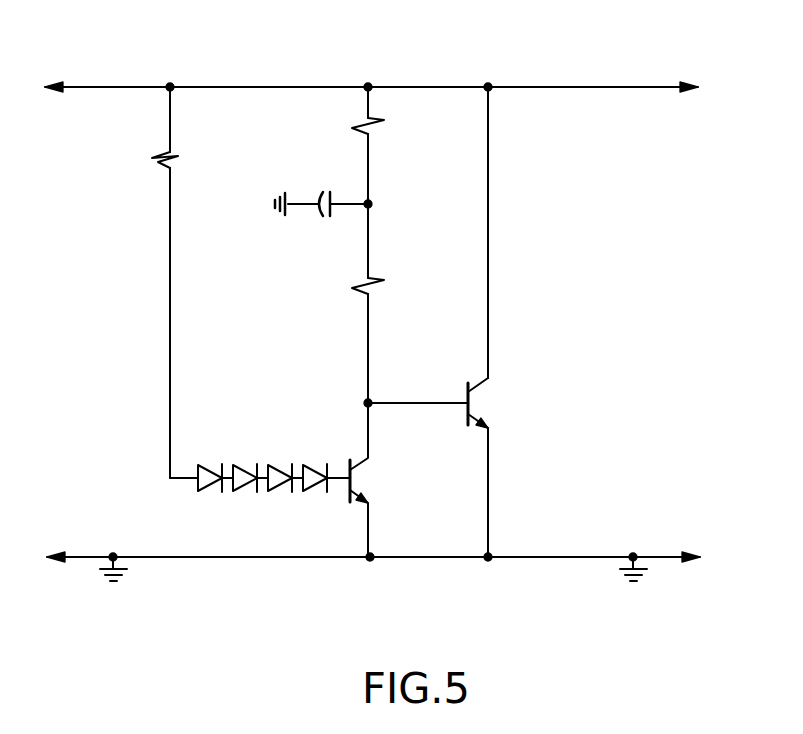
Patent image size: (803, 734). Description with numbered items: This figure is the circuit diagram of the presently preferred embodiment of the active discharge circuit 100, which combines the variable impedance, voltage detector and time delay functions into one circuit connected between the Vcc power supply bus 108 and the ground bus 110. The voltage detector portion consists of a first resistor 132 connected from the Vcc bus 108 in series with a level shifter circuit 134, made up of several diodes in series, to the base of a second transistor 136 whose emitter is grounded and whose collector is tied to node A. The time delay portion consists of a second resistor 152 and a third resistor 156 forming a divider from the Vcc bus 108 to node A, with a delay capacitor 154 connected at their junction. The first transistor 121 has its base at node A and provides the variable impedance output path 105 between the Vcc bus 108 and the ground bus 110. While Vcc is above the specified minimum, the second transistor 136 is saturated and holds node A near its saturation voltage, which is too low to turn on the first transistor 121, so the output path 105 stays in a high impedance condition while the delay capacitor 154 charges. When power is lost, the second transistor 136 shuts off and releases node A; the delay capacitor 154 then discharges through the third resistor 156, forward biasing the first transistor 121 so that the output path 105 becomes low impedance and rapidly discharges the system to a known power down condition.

The active discharge circuit 100 is at (580, 283).
The variable impedance output path 105 is at (488, 322).
The Vcc power supply bus 108 is at (585, 87).
The ground bus 110 is at (258, 559).
The first transistor 121 is at (480, 402).
The first resistor 132 is at (174, 155).
The level shifter circuit 134 is at (265, 456).
The second transistor 136 is at (356, 470).
The second resistor 152 is at (380, 123).
The delay capacitor 154 is at (336, 196).
The third resistor 156 is at (378, 284).
The node A is at (366, 403).